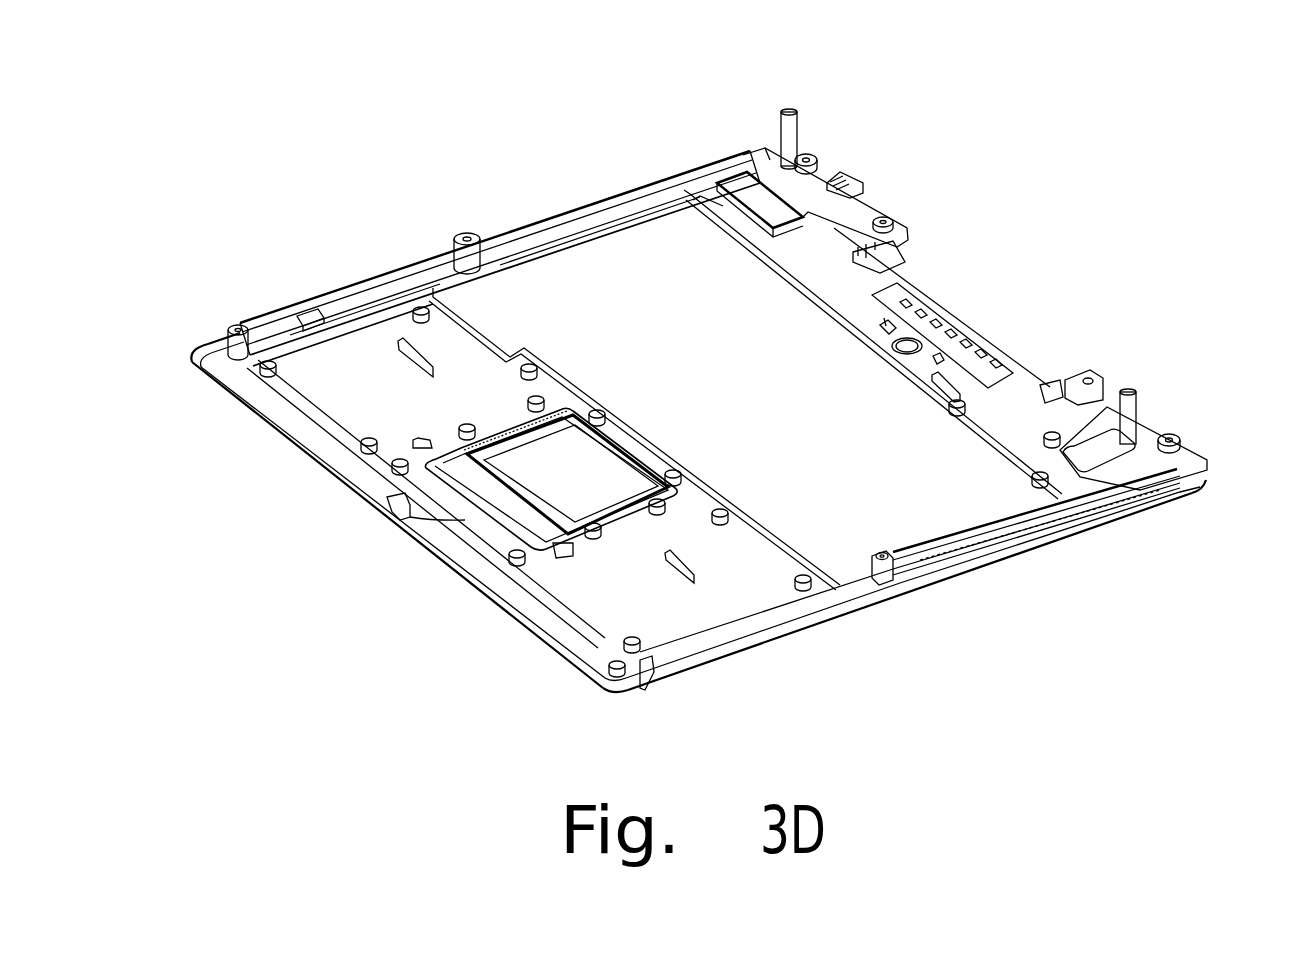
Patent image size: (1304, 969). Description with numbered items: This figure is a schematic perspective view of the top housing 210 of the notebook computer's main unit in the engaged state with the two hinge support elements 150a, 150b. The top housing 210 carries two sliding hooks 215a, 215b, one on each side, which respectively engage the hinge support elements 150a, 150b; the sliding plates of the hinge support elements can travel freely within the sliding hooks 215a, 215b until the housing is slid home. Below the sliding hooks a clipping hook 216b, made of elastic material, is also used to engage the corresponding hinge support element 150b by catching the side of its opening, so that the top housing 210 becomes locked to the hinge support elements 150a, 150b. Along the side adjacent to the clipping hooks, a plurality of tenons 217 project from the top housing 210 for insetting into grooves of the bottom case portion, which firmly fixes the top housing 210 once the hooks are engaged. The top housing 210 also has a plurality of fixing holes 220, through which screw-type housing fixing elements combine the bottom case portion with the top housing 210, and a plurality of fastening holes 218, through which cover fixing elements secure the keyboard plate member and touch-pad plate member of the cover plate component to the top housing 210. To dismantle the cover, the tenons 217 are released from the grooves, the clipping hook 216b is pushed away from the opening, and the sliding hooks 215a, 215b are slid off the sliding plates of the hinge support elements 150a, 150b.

The top housing 210 is at (590, 278).
The sliding hook 215a is at (1060, 530).
The sliding hook 215b is at (657, 197).
The clipping hook 216b is at (300, 318).
The tenon 217 is at (223, 390).
The fastening hole 218 is at (410, 312).
The fixing hole 220 is at (197, 345).
The hinge support element 150a is at (1190, 452).
The hinge support element 150b is at (822, 177).